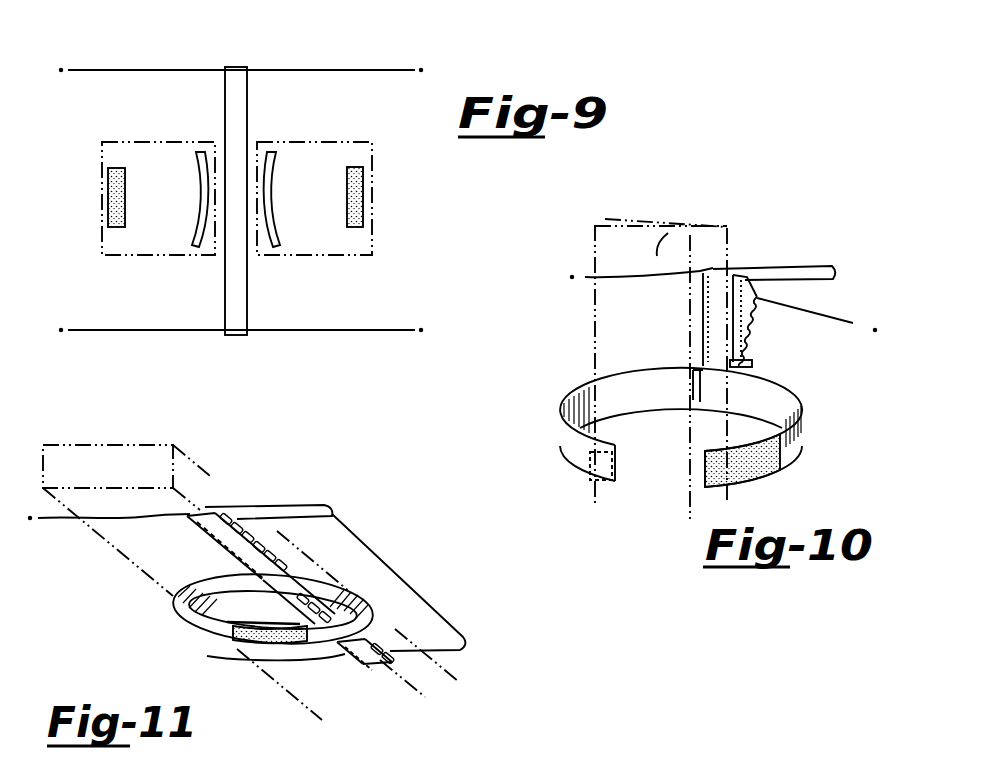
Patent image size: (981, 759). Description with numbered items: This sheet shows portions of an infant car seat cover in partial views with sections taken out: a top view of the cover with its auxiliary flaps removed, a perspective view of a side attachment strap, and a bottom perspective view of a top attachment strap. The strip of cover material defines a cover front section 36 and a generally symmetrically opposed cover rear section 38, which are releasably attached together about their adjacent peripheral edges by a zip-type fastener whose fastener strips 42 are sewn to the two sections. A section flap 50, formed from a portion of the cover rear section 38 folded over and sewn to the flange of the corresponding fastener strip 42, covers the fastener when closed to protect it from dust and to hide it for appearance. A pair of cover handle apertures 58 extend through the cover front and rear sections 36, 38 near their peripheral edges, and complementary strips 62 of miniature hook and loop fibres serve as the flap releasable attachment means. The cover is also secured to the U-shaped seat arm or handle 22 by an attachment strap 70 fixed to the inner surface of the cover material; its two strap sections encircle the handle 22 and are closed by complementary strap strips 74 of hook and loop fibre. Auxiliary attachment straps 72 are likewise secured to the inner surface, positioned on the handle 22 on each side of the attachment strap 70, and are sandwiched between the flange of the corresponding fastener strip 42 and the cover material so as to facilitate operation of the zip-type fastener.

In FIG. 10, the arm 22 is at (690, 216).
In FIG. 11, the arm 22 is at (215, 477).
In FIG. 9, the cover front section 36 is at (373, 305).
In FIG. 10, the cover front section 36 is at (847, 343).
In FIG. 9, the cover rear section 38 is at (140, 318).
In FIG. 10, the cover rear section 38 is at (625, 300).
In FIG. 11, the cover rear section 38 is at (207, 656).
In FIG. 10, the fastener strips 42 is at (727, 272).
In FIG. 11, the fastener strips 42 is at (215, 512).
In FIG. 9, the section flap 50 is at (240, 325).
In FIG. 10, the section flap 50 is at (813, 296).
In FIG. 11, the section flap 50 is at (340, 547).
In FIG. 9, the cover handle apertures 58 is at (203, 193).
In FIG. 9, the complementary strips 62 is at (109, 226).
In FIG. 11, the attachment strap 70 is at (367, 607).
In FIG. 10, the auxiliary attachment straps 72 is at (572, 394).
In FIG. 10, the complementary strap strips 74 is at (713, 483).
In FIG. 11, the complementary strap strips 74 is at (286, 646).